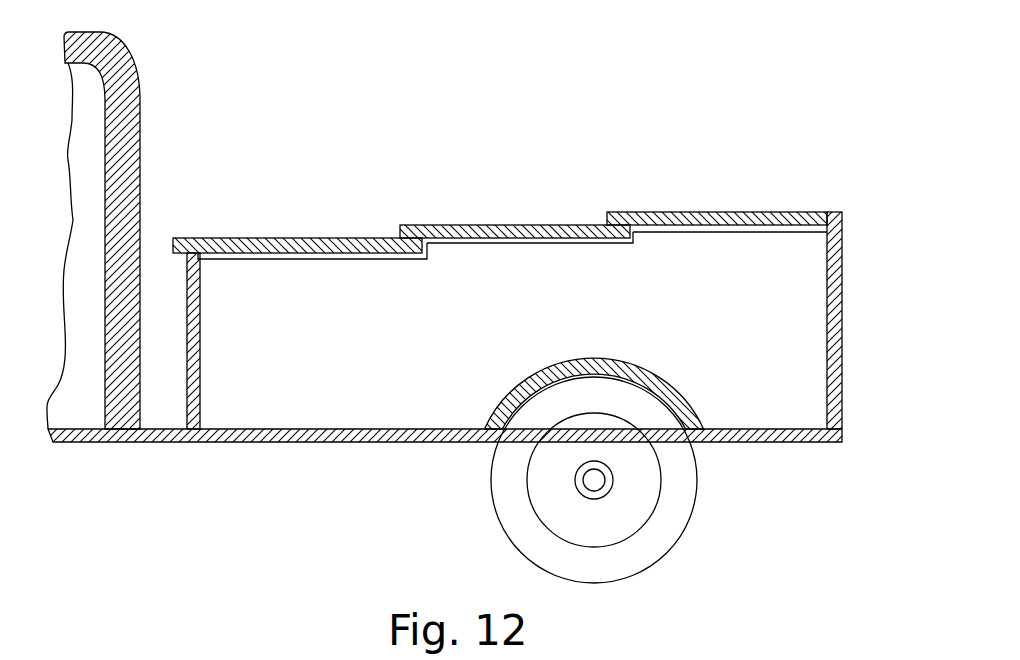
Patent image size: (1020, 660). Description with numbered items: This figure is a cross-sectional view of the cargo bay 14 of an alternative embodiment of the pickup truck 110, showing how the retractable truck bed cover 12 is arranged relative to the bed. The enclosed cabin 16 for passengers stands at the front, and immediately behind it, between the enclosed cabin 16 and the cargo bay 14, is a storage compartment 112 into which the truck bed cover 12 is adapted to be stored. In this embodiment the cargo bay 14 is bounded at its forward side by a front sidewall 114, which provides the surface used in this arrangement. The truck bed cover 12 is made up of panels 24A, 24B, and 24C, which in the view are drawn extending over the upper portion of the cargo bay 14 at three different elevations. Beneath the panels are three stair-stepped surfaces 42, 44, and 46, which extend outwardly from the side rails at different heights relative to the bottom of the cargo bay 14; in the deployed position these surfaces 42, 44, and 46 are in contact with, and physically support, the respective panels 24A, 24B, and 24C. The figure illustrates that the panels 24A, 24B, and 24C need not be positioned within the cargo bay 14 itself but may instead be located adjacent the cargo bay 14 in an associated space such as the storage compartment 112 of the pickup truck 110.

The pickup truck 110 is at (459, 59).
The truck bed cover 12 is at (614, 152).
The cargo bay 14 is at (778, 341).
The enclosed cabin 16 is at (140, 100).
The panel 24A is at (287, 237).
The panel 24B is at (500, 225).
The panel 24C is at (720, 212).
The stair-stepped surface 42 is at (323, 260).
The stair-stepped surface 44 is at (537, 243).
The stair-stepped surface 46 is at (787, 232).
The storage compartment 112 is at (160, 284).
The front sidewall 114 is at (200, 368).